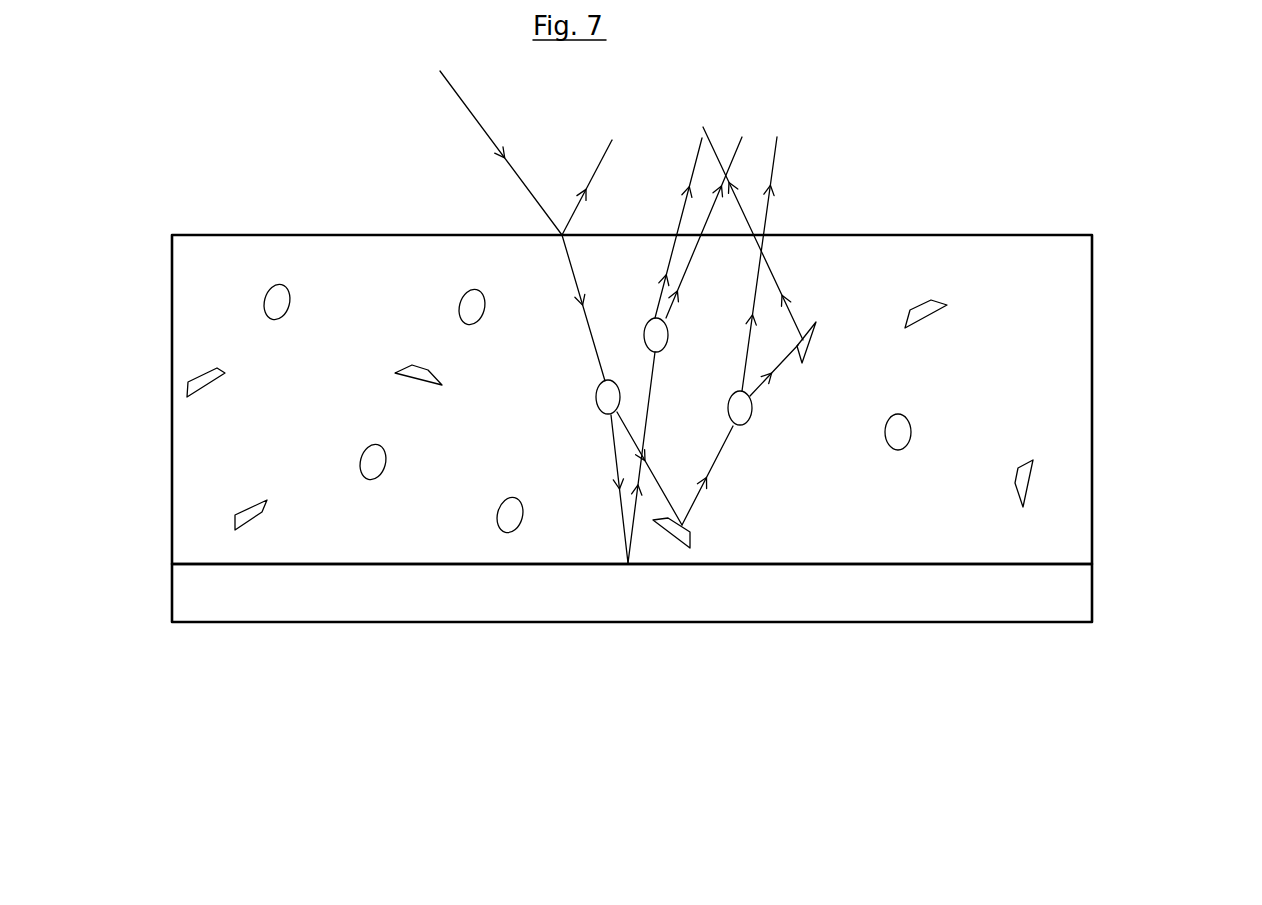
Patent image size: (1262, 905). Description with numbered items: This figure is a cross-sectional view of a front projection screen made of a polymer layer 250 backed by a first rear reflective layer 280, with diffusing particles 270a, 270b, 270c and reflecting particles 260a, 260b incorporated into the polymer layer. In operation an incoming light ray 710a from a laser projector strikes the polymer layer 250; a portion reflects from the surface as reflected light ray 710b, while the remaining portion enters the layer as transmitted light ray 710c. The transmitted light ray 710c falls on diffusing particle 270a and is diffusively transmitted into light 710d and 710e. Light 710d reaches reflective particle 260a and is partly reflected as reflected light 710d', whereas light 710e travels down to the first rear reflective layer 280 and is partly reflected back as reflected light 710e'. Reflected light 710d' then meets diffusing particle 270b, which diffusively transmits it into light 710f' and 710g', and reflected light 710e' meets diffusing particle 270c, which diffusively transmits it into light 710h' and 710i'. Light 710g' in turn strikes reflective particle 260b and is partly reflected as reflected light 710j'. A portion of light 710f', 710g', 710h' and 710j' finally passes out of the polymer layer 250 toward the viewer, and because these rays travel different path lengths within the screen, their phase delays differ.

The polymer layer 250 is at (1092, 343).
The first rear reflective layer 280 is at (1092, 593).
The diffusing particle 270a is at (598, 395).
The diffusing particle 270b is at (740, 408).
The diffusing particle 270c is at (648, 326).
The reflective particle 260a is at (692, 540).
The reflective particle 260b is at (815, 345).
The incoming light ray 710a is at (470, 117).
The reflected light ray 710b is at (597, 163).
The transmitted light ray 710c is at (577, 282).
The diffusively transmitted light 710d is at (540, 489).
The diffusively transmitted light 710e is at (567, 468).
The reflected light 710e' is at (675, 457).
The diffusively transmitted light 710h' is at (639, 228).
The diffusively transmitted light 710i' is at (705, 227).
The reflected light 710d' is at (765, 475).
The diffusively transmitted light 710f' is at (717, 264).
The diffusively transmitted light 710g' is at (813, 387).
The reflected light 710j' is at (793, 233).